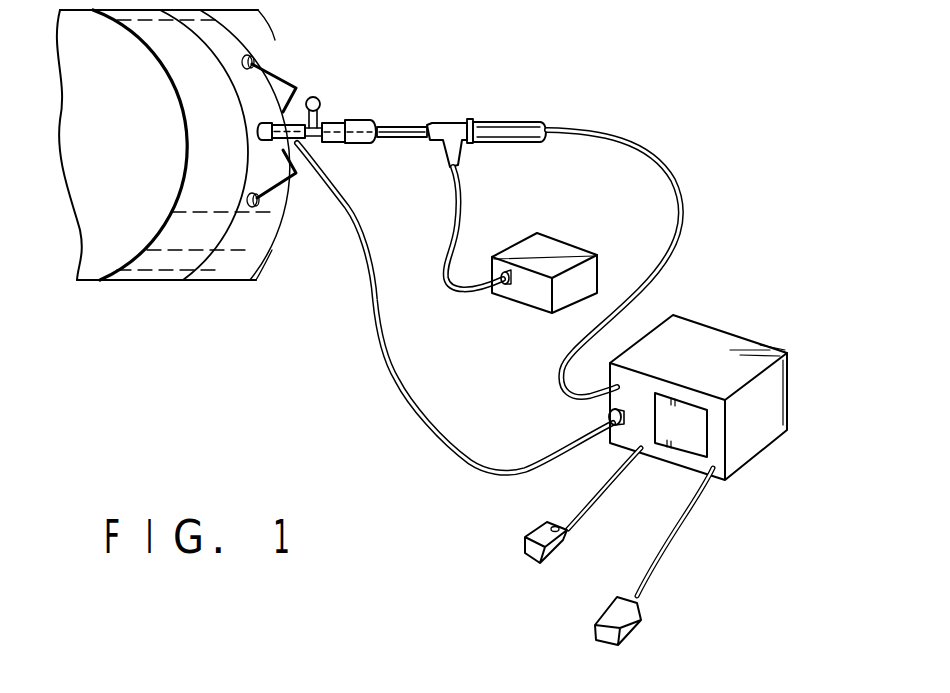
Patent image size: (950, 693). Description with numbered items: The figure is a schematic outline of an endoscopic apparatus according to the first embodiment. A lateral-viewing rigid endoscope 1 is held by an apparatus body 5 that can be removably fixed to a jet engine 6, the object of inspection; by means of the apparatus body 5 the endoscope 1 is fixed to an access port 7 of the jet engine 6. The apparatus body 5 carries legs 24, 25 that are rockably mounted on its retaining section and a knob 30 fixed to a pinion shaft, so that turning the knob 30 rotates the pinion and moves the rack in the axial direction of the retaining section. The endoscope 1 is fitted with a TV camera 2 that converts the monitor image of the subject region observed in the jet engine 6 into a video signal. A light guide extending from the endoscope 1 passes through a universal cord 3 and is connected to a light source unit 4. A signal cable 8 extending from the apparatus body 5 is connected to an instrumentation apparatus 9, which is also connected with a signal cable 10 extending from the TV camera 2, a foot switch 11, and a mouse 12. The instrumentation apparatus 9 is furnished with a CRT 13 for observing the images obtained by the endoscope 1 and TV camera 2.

The lateral-viewing rigid endoscope 1 is at (408, 120).
The TV camera 2 is at (513, 121).
The universal cord 3 is at (447, 224).
The light source unit 4 is at (550, 246).
The apparatus body 5 is at (355, 104).
The jet engine 6 is at (155, 267).
The access port 7 is at (257, 133).
The signal cable 8 is at (373, 330).
The instrumentation apparatus 9 is at (697, 330).
The signal cable 10 is at (637, 143).
The foot switch 11 is at (613, 613).
The mouse 12 is at (522, 553).
The CRT 13 is at (687, 448).
The leg 24 is at (276, 68).
The leg 25 is at (277, 193).
The knob 30 is at (317, 100).